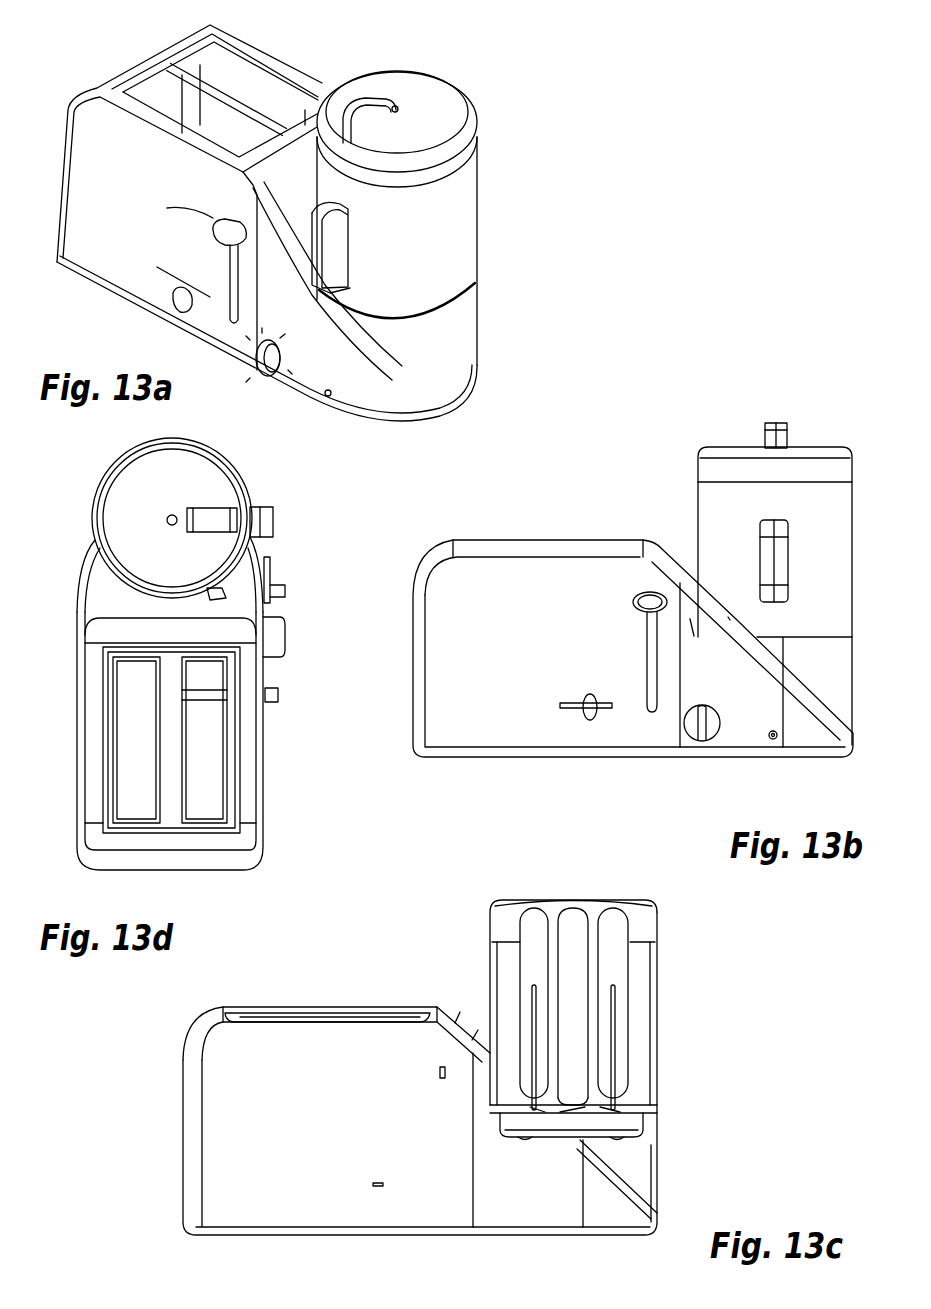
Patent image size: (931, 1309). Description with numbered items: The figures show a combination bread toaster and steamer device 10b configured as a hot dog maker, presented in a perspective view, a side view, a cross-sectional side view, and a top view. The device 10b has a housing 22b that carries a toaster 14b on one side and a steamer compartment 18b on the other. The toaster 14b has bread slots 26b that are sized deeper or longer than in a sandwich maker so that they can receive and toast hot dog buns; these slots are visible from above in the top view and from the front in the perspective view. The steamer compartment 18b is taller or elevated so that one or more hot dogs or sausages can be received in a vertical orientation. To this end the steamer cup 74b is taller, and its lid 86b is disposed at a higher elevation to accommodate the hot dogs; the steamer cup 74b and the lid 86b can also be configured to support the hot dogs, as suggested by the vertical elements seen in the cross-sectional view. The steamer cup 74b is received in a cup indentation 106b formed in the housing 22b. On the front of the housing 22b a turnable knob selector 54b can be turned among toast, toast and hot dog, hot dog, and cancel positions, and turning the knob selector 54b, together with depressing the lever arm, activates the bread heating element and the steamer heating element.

In FIG. 13A, the device 10b is at (296, 430).
In FIG. 13C, the device 10b is at (628, 1254).
In FIG. 13A, the toaster 14b is at (316, 57).
In FIG. 13C, the toaster 14b is at (423, 990).
In FIG. 13A, the steamer compartment 18b is at (514, 313).
In FIG. 13C, the steamer compartment 18b is at (675, 1086).
In FIG. 13A, the housing 22b is at (53, 217).
In FIG. 13A, the bread slots 26b is at (152, 97).
In FIG. 13D, the bread slots 26b is at (213, 797).
In FIG. 13C, the bread slots 26b is at (303, 1007).
In FIG. 13A, the knob selector 54b is at (257, 372).
In FIG. 13B, the knob selector 54b is at (717, 734).
In FIG. 13A, the steamer cup 74b is at (477, 207).
In FIG. 13C, the steamer cup 74b is at (657, 988).
In FIG. 13A, the lid 86b is at (438, 82).
In FIG. 13C, the lid 86b is at (513, 900).
In FIG. 13D, the cup indentation 106b is at (227, 593).
In FIG. 13C, the cup indentation 106b is at (490, 1095).